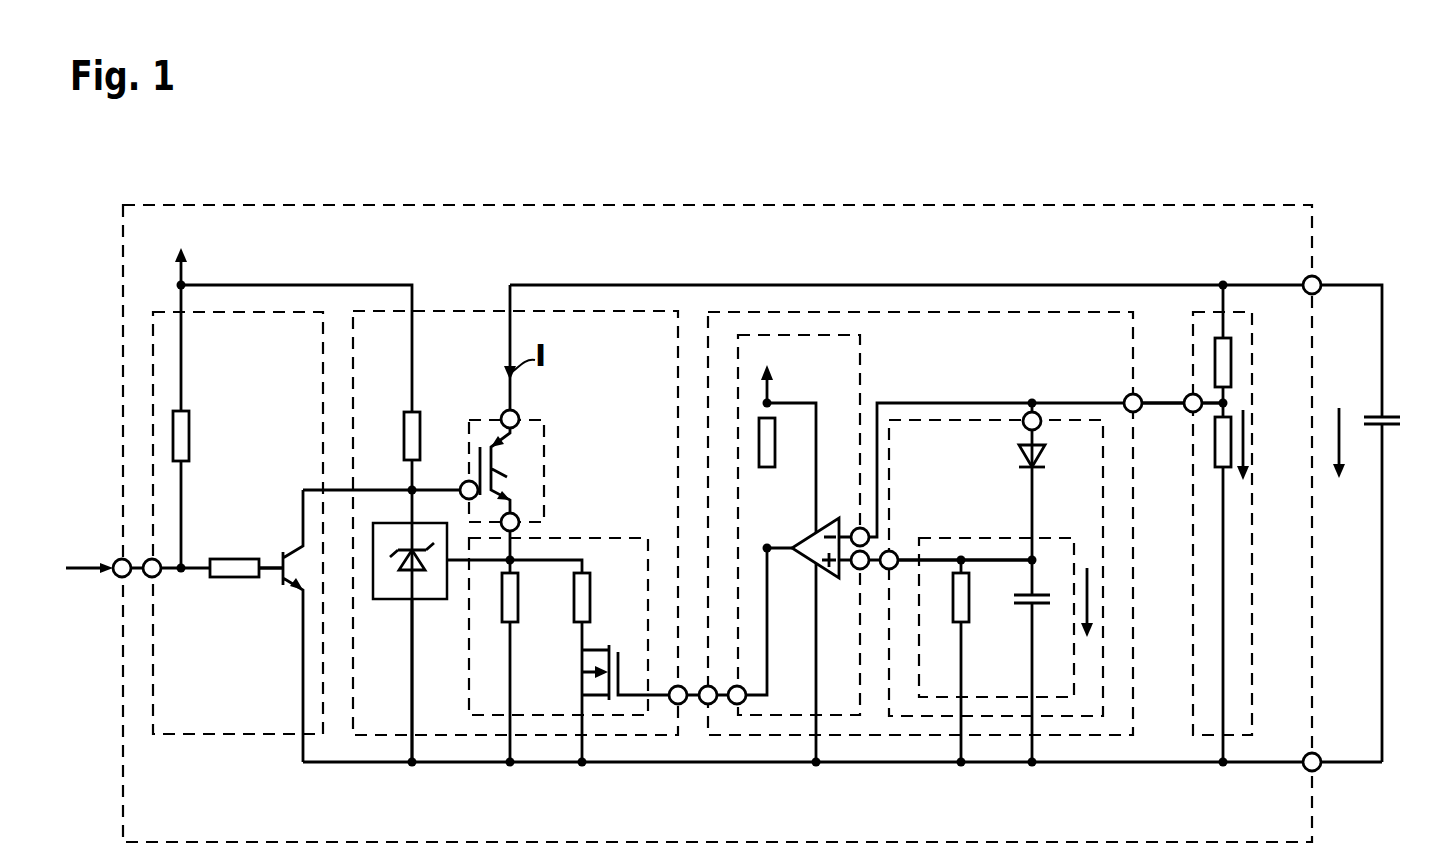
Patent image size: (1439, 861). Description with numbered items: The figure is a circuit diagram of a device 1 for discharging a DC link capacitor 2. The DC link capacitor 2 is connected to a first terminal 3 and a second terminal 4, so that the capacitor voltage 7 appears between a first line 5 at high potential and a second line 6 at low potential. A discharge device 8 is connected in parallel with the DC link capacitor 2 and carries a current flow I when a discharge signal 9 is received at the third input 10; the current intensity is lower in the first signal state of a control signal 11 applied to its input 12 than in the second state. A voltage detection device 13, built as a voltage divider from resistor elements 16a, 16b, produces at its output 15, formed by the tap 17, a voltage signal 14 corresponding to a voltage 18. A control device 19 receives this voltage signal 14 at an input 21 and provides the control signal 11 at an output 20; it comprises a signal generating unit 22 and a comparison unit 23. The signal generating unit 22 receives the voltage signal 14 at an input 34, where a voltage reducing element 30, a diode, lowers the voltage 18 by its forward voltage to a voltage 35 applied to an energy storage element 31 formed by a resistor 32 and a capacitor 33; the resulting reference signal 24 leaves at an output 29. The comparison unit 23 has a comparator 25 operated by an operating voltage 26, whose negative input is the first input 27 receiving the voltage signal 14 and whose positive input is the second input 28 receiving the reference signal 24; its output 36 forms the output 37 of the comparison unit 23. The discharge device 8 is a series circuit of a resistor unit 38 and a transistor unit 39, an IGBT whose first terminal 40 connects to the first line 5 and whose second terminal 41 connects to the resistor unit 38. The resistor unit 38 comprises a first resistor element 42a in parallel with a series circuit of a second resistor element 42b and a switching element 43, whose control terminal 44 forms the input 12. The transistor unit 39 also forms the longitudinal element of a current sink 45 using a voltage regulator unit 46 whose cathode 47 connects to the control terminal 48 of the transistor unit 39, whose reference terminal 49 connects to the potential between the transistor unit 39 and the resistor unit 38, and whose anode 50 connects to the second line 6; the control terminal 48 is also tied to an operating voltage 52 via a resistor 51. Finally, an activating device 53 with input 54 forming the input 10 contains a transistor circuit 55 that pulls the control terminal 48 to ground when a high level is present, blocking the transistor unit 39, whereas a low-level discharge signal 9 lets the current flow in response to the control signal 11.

The device 1 is at (1312, 225).
The DC link capacitor 2 is at (1384, 415).
The first terminal 3 is at (1309, 278).
The second terminal 4 is at (1320, 766).
The first line 5 is at (683, 285).
The second line 6 is at (315, 763).
The capacitor voltage 7 is at (1340, 440).
The discharge device 8 is at (452, 311).
The discharge signal 9 is at (107, 565).
The third input 10 is at (122, 578).
The control signal 11 is at (689, 702).
The input 12 is at (672, 702).
The voltage detection device 13 is at (1212, 310).
The voltage signal 14 is at (1145, 410).
The output 15 is at (1189, 412).
The resistor element 16a is at (1230, 362).
The resistor element 16b is at (1228, 468).
The tap 17 is at (1230, 403).
The voltage 18 is at (1243, 437).
The control device 19 is at (978, 312).
The output 20 is at (714, 702).
The input 21 is at (1140, 398).
The signal generating unit 22 is at (982, 420).
The comparison unit 23 is at (830, 335).
The reference signal 24 is at (868, 570).
The comparator 25 is at (808, 535).
The operating voltage 26 is at (770, 392).
The first input 27 is at (855, 530).
The second input 28 is at (858, 572).
The output 29 is at (893, 553).
The voltage reducing element 30 is at (1040, 455).
The energy storage element 31 is at (978, 538).
The resistor 32 is at (968, 588).
The capacitor 33 is at (1040, 597).
The input 34 is at (1040, 416).
The voltage 35 is at (1090, 600).
The output 36 is at (792, 556).
The output 37 is at (745, 702).
The resistor unit 38 is at (622, 538).
The transistor unit 39 is at (546, 470).
The first terminal 40 is at (505, 412).
The second terminal 41 is at (520, 526).
The first resistor element 42a is at (518, 592).
The second resistor element 42b is at (577, 624).
The switching element 43 is at (572, 645).
The control terminal 44 is at (620, 702).
The current sink 45 is at (572, 390).
The voltage regulator unit 46 is at (420, 600).
The cathode 47 is at (405, 522).
The control terminal 48 is at (463, 482).
The reference terminal 49 is at (447, 545).
The anode 50 is at (407, 600).
The resistor 51 is at (418, 418).
The operating voltage 52 is at (184, 270).
The activating device 53 is at (290, 312).
The input 54 is at (152, 578).
The transistor circuit 55 is at (234, 407).